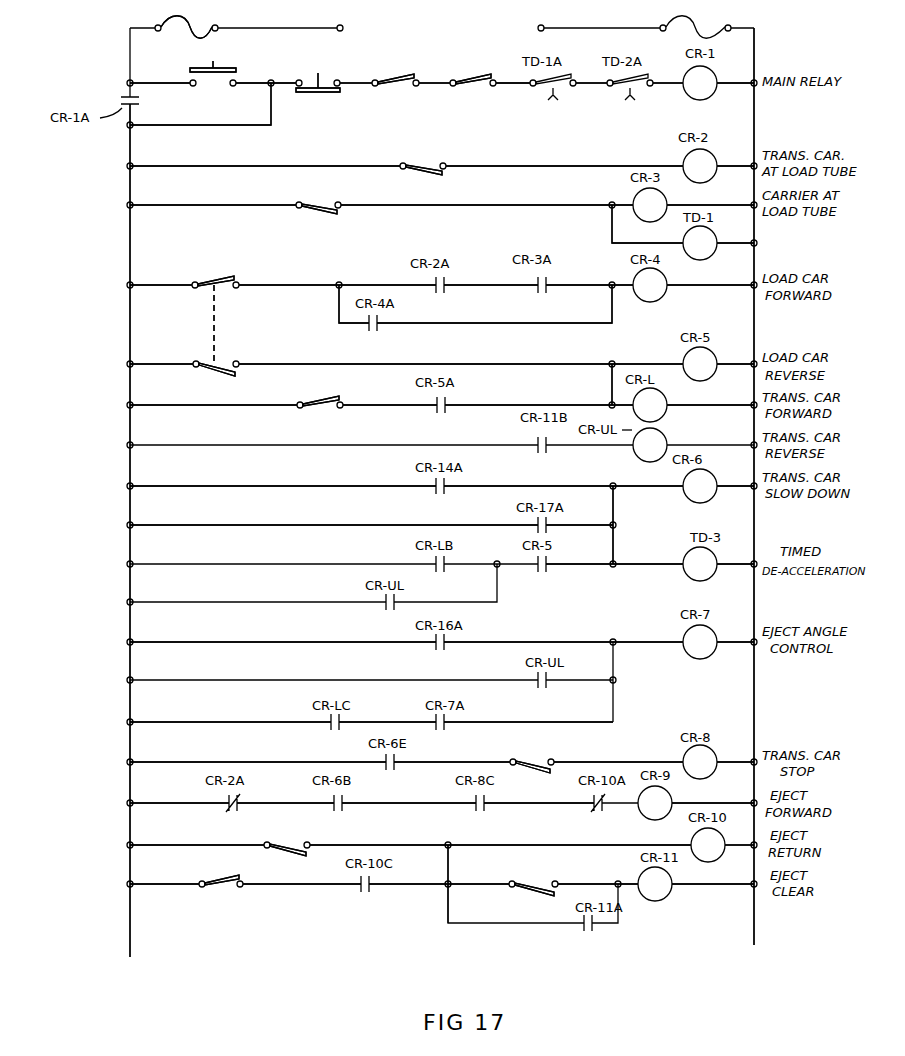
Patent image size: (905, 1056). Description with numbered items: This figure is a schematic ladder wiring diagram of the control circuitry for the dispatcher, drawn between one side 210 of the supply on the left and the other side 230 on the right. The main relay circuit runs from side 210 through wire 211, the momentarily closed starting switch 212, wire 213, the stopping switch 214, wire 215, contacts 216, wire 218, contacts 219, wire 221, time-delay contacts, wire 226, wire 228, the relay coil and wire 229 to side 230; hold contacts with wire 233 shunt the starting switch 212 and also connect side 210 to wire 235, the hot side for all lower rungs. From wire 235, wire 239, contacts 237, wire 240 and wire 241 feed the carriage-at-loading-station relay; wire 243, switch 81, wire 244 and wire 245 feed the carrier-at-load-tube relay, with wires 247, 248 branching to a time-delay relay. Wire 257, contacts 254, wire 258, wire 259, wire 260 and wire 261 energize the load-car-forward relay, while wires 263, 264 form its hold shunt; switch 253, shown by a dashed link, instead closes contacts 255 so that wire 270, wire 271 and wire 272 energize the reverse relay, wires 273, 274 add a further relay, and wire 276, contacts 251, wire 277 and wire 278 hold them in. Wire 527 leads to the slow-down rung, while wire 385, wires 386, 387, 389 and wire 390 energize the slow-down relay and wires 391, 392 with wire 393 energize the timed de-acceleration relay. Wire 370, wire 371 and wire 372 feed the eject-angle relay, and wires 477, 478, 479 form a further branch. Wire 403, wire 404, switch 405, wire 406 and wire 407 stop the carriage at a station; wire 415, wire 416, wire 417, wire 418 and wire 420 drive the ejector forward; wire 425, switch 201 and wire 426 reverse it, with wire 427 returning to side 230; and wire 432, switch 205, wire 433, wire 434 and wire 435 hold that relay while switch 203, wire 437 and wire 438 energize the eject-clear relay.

The side of the supply 210 is at (130, 50).
The wire 211 is at (150, 80).
The starting switch 212 is at (228, 68).
The wire 213 is at (252, 82).
The stopping switch 214 is at (318, 93).
The wire 215 is at (362, 81).
The contacts of switch 217 216 is at (402, 88).
The wire 218 is at (437, 81).
The contacts of switch 220 219 is at (472, 88).
The wire 221 is at (512, 85).
The wire 226 is at (588, 86).
The wire 228 is at (672, 86).
The wire 229 is at (732, 86).
The side of the supply 230 is at (754, 56).
The wire 233 is at (195, 124).
The wire 235 is at (130, 246).
The contacts of switch 238 237 is at (428, 165).
The wire 239 is at (298, 165).
The wire 240 is at (558, 165).
The wire 241 is at (720, 165).
The wire 243 is at (177, 204).
The switch 81 is at (310, 216).
The wire 244 is at (488, 206).
The wire 245 is at (695, 204).
The wire 247 is at (621, 242).
The wire 248 is at (732, 242).
The contacts of switch 250 251 is at (322, 401).
The switch 253 is at (233, 329).
The contacts of switch 253 254 is at (228, 278).
The contacts of switch 253 255 is at (236, 361).
The wire 257 is at (154, 284).
The wire 258 is at (288, 284).
The wire 259 is at (486, 290).
The wire 260 is at (584, 284).
The wire 261 is at (702, 287).
The wire 263 is at (340, 325).
The wire 264 is at (497, 322).
The wire 270 is at (150, 362).
The wire 271 is at (470, 363).
The wire 272 is at (725, 363).
The wire 273 is at (610, 391).
The wire 274 is at (700, 405).
The wire 276 is at (216, 404).
The wire 277 is at (392, 407).
The wire 278 is at (512, 408).
The conductor 527 is at (322, 485).
The wire 385 is at (324, 525).
The wire 386 is at (580, 528).
The wire 387 is at (616, 506).
The wire 389 is at (618, 482).
The wire 390 is at (736, 483).
The wire 391 is at (615, 546).
The wire 392 is at (645, 568).
The wire 393 is at (736, 562).
The wire 370 is at (265, 641).
The wire 371 is at (555, 641).
The wire 372 is at (732, 641).
The conductor 477 is at (210, 723).
The conductor 478 is at (389, 721).
The conductor 479 is at (510, 721).
The wire 403 is at (220, 761).
The wire 404 is at (450, 761).
The switch 405 is at (540, 764).
The wire 406 is at (612, 761).
The wire 407 is at (733, 761).
The wire 415 is at (184, 808).
The wire 416 is at (290, 808).
The wire 417 is at (396, 808).
The wire 418 is at (505, 802).
The wire 420 is at (705, 802).
The wire 425 is at (182, 848).
The switch 201 is at (288, 857).
The wire 426 is at (520, 848).
The conductor 427 is at (732, 845).
The wire 432 is at (168, 890).
The switch 205 is at (228, 890).
The wire 433 is at (316, 890).
The wire 434 is at (418, 890).
The wire 435 is at (449, 865).
The wire 437 is at (590, 882).
The switch 203 is at (522, 896).
The wire 438 is at (722, 886).